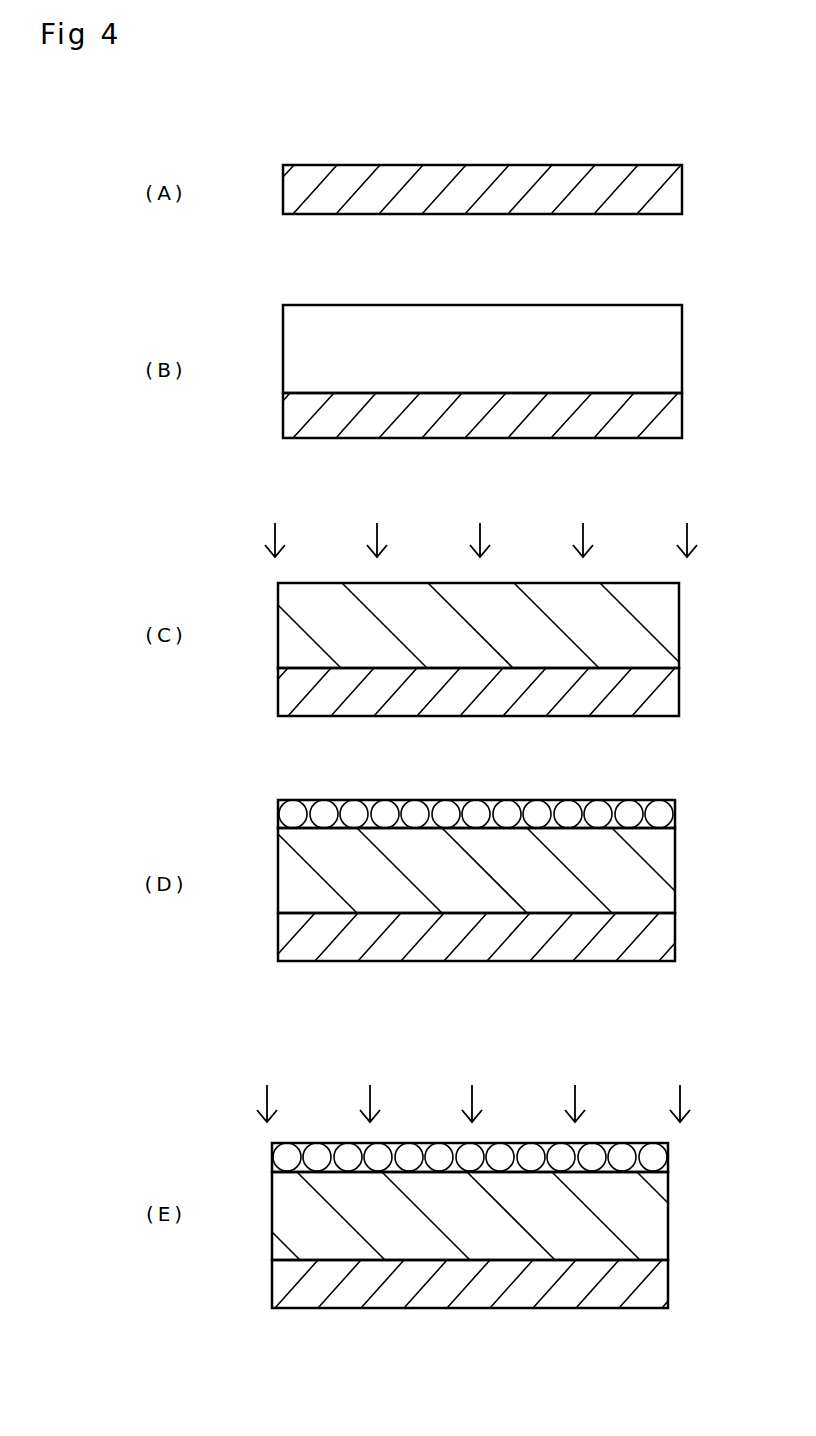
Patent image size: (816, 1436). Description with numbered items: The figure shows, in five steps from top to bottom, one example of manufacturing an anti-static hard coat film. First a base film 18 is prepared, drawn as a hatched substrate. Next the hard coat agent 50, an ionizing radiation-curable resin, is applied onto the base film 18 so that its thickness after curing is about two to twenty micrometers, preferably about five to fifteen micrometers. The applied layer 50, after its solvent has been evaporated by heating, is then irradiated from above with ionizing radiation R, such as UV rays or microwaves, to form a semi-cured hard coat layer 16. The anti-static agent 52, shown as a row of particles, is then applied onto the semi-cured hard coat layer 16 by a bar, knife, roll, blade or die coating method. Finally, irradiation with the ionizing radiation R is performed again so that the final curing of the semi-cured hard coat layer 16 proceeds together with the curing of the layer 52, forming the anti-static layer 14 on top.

The base film 18 is at (667, 190).
The hard coat agent 50 is at (672, 348).
The semi-cured hard coat layer 16 is at (668, 625).
The anti-static agent 52 is at (665, 817).
The anti-static layer 14 is at (658, 1158).
The ionizing radiation R is at (690, 538).